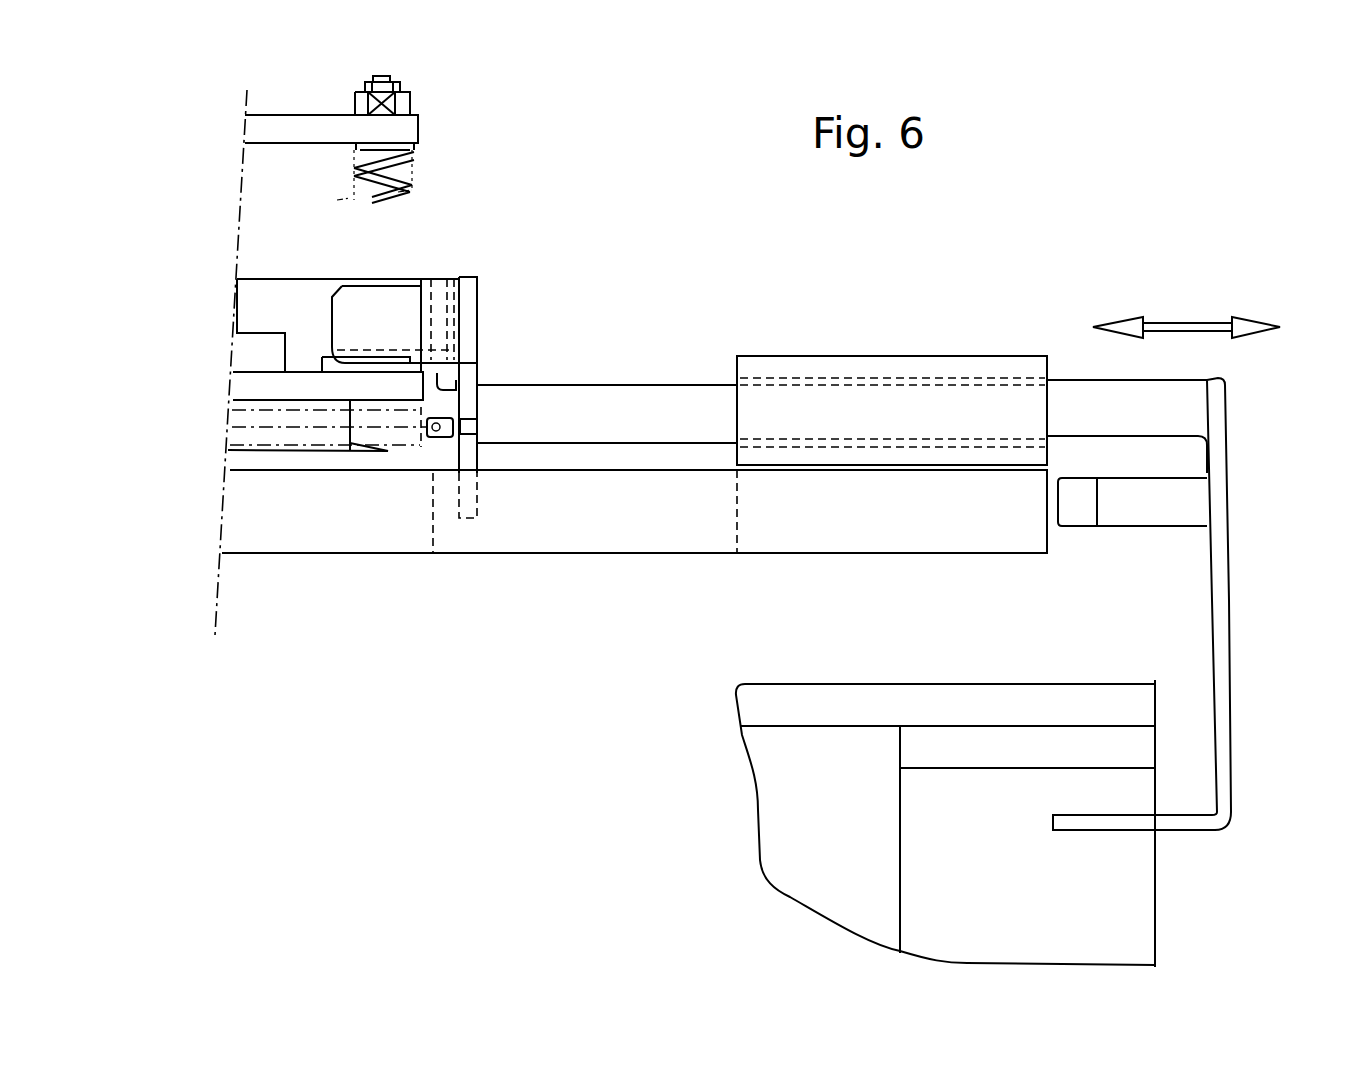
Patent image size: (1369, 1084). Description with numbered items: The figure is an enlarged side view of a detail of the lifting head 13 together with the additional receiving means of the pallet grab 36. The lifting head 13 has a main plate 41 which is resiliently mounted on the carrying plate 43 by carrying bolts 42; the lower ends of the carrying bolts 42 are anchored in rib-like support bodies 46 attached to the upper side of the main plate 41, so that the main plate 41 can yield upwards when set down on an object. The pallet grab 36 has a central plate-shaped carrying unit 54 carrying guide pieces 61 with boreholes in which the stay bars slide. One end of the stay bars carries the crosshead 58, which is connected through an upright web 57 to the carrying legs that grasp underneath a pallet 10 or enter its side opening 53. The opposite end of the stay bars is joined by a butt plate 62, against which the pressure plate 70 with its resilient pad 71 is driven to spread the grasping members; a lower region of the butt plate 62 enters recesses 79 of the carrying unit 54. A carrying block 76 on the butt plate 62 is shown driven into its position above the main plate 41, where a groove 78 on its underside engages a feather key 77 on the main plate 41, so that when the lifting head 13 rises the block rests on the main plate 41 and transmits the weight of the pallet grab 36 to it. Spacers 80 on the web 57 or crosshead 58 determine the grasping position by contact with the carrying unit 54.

The pallet 10 is at (705, 865).
The lifting head 13 is at (482, 140).
The pallet grab 36 is at (662, 592).
The main plate 41 is at (288, 395).
The carrying bolts 42 is at (410, 152).
The carrying plate 43 is at (403, 121).
The support bodies 46 is at (252, 303).
The side opening 53 is at (1143, 865).
The carrying unit 54 is at (315, 575).
The upright webs 57 is at (1232, 667).
The crosshead 58 is at (1217, 421).
The guide pieces 61 is at (962, 356).
The butt plate 62 is at (467, 310).
The pressure plate 70 is at (460, 387).
The resilient pad 71 is at (457, 366).
The carrying block 76 is at (387, 298).
The feather key 77 is at (290, 367).
The groove 78 is at (360, 357).
The recesses 79 is at (580, 543).
The spacers 80 is at (1142, 512).